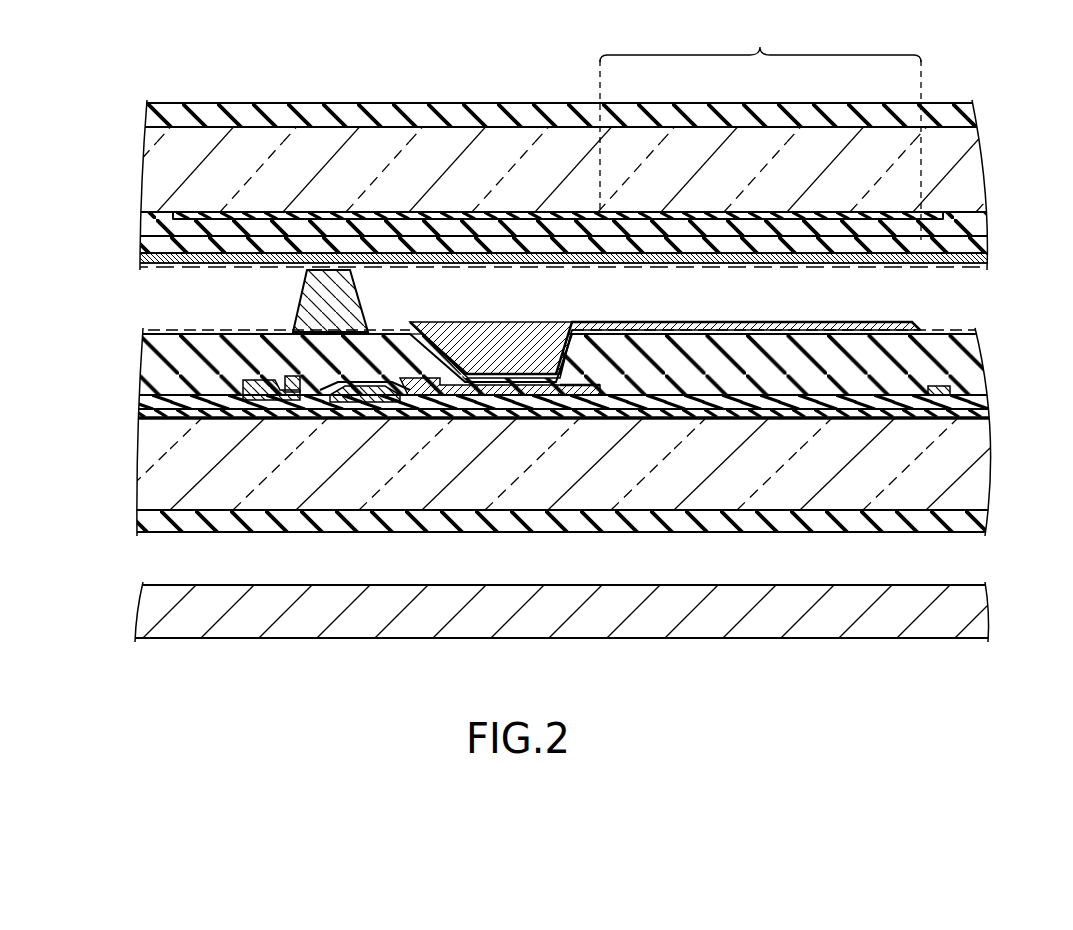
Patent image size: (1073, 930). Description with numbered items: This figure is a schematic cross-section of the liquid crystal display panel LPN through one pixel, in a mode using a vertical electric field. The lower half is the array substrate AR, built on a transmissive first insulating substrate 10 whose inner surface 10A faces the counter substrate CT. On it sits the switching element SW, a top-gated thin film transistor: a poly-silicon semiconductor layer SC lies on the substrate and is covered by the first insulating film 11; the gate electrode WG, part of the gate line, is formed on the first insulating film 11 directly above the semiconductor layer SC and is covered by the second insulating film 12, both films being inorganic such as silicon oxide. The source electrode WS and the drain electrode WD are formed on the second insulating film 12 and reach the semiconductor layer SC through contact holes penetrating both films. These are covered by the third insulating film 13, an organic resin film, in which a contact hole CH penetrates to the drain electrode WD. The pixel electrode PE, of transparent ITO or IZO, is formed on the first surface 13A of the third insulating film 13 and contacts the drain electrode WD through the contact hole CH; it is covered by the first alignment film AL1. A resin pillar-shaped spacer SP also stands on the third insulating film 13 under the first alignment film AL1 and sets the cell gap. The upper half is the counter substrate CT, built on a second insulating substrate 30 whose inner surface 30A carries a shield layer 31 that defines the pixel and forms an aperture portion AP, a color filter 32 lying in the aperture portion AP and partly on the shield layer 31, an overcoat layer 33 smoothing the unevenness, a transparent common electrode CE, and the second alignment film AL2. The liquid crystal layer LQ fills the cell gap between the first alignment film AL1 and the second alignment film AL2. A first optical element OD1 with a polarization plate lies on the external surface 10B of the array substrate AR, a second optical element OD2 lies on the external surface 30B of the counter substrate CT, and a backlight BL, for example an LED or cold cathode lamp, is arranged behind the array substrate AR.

The second insulating substrate 30 is at (150, 170).
The shield layer 31 is at (176, 216).
The color filter 32 is at (162, 236).
The overcoat layer 33 is at (162, 254).
The second alignment film AL2 is at (150, 262).
The liquid crystal layer LQ is at (150, 298).
The first alignment film AL1 is at (165, 332).
The third insulating film 13 is at (160, 374).
The second insulating film 12 is at (150, 401).
The first insulating film 11 is at (150, 414).
The first insulating substrate 10 is at (150, 496).
The second optical element OD2 is at (966, 114).
The liquid crystal display panel LPN is at (982, 151).
The counter substrate CT is at (966, 186).
The inner surface of second insulating substrate 30A is at (965, 211).
The external surface of counter substrate 30B is at (916, 121).
The common electrode CE is at (932, 265).
The first surface of third insulating film 13A is at (790, 324).
The pixel electrode PE is at (575, 322).
The contact hole CH is at (495, 372).
The pillar-shaped spacer SP is at (348, 292).
The inner surface of first insulating substrate 10A is at (950, 406).
The external surface of array substrate 10B is at (937, 515).
The array substrate AR is at (996, 456).
The first optical element OD1 is at (975, 520).
The backlight BL is at (982, 622).
The aperture portion AP is at (760, 129).
The source electrode WS is at (250, 382).
The switching element SW is at (302, 428).
The semiconductor layer SC is at (340, 388).
The gate electrode WG is at (352, 404).
The drain electrode WD is at (422, 398).